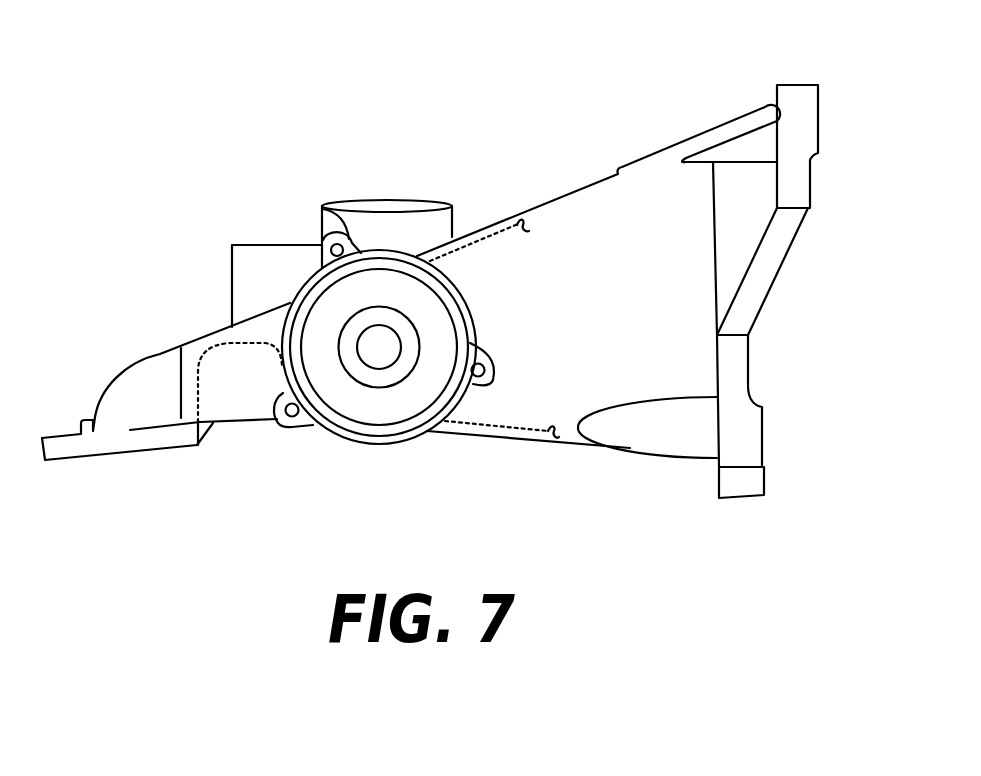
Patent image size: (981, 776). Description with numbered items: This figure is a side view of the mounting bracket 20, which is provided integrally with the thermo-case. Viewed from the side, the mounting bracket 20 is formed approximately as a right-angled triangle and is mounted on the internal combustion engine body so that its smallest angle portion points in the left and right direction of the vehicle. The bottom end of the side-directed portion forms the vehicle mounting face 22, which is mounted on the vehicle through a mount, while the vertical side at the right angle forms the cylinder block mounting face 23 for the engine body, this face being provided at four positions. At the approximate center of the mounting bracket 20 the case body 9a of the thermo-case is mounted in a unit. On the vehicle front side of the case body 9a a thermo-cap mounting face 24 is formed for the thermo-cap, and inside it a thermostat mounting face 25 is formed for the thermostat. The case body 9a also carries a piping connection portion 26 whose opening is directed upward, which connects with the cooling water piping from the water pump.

The mounting bracket 20 is at (628, 124).
The vehicle mounting face 22 is at (115, 458).
The cylinder block mounting face 23 is at (817, 83).
The thermo-cap mounting face 24 is at (323, 208).
The thermostat mounting face 25 is at (383, 428).
The piping connection portion 26 is at (415, 199).
The case body 9a is at (476, 313).